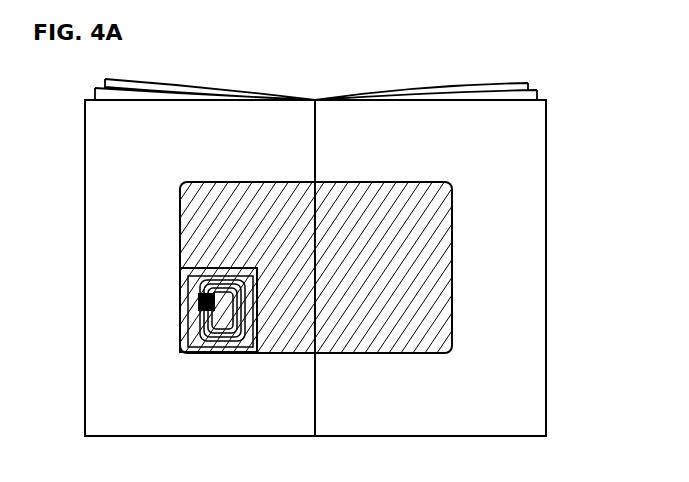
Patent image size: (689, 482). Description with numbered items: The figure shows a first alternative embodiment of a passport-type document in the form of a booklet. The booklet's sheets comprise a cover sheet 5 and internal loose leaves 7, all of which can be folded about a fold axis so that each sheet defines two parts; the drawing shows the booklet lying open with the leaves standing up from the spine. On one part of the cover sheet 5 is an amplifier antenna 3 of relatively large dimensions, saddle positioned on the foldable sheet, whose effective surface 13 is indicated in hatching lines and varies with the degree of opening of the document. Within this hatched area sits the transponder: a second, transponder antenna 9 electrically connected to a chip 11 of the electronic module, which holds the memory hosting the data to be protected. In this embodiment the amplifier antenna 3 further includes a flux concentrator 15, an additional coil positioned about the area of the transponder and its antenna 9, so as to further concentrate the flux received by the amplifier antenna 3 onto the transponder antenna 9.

The amplifier antenna 3 is at (180, 182).
The cover sheet 5 is at (503, 78).
The internal loose leaves 7 is at (493, 410).
The transponder antenna 9 is at (240, 341).
The chip 11 is at (198, 294).
The effective surface 13 is at (428, 247).
The flux concentrator 15 is at (183, 268).